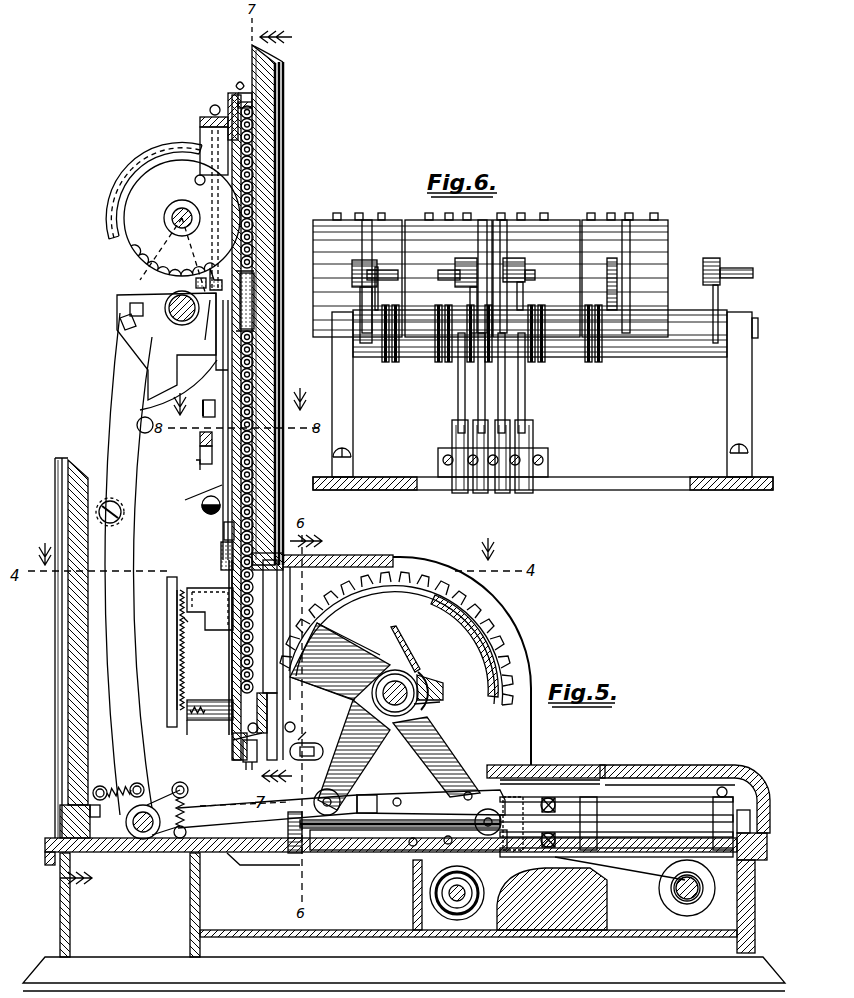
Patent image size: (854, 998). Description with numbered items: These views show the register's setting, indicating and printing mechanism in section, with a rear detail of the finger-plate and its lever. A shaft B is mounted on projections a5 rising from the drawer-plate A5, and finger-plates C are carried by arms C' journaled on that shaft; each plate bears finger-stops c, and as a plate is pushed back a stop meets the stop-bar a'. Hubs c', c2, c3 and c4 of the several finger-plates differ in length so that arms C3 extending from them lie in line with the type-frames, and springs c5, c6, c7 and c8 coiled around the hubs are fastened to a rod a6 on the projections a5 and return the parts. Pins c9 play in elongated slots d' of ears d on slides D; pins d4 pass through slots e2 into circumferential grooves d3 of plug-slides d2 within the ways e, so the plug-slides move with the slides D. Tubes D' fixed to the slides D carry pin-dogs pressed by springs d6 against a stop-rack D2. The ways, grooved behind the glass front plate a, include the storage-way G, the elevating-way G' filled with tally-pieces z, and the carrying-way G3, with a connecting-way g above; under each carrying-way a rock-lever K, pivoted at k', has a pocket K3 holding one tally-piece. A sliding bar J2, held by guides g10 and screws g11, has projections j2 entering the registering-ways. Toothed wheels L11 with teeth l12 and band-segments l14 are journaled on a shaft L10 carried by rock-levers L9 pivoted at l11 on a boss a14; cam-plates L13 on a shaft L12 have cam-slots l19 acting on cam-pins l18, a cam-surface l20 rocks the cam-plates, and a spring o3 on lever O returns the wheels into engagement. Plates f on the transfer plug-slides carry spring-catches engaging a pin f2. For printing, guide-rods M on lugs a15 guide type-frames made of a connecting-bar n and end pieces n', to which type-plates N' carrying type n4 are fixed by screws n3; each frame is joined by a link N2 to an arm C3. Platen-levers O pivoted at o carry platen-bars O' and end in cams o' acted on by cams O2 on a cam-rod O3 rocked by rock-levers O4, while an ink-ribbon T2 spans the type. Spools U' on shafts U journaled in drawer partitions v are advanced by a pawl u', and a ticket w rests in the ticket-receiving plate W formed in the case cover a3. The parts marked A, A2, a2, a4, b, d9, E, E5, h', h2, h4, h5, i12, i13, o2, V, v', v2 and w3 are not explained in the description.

In FIG. 5, the frame side wall A is at (62, 712).
In FIG. 5, the vertical guide column A2 is at (283, 150).
In FIG. 5, the drawer-plate A5 is at (130, 853).
In FIG. 6, the drawer-plate A5 is at (666, 490).
In FIG. 5, the front plate a is at (281, 305).
In FIG. 5, the stop-bar a' is at (327, 553).
In FIG. 5, the gear housing a2 is at (531, 710).
In FIG. 5, the cover of the case a3 is at (670, 766).
In FIG. 5, the wall plate a4 is at (75, 752).
In FIG. 5, the projections a5 is at (195, 699).
In FIG. 6, the projections a5 is at (542, 394).
In FIG. 5, the rod a6 is at (444, 691).
In FIG. 5, the boss a14 is at (420, 800).
In FIG. 5, the lugs a15 is at (295, 853).
In FIG. 5, the shaft B is at (410, 680).
In FIG. 6, the shaft B is at (755, 325).
In FIG. 6, the pin b is at (384, 288).
In FIG. 5, the finger-plate C is at (398, 619).
In FIG. 6, the finger-plate C is at (536, 265).
In FIG. 6, the arm C' is at (506, 258).
In FIG. 5, the finger-stop c is at (476, 646).
In FIG. 6, the finger-stop c is at (506, 251).
In FIG. 5, the hub of the units finger-plate c' is at (348, 650).
In FIG. 5, the hub of the tens finger-plate c2 is at (310, 743).
In FIG. 6, the hub of the tens finger-plate c2 is at (360, 298).
In FIG. 5, the arm C3 is at (440, 740).
In FIG. 6, the hub of the hundreds finger-plate c3 is at (610, 367).
In FIG. 5, the hub c4 is at (440, 704).
In FIG. 6, the hub c4 is at (545, 358).
In FIG. 6, the spring c5 is at (395, 362).
In FIG. 6, the spring c6 is at (438, 362).
In FIG. 5, the spring c7 is at (443, 686).
In FIG. 6, the spring c7 is at (545, 362).
In FIG. 5, the spring c8 is at (412, 652).
In FIG. 5, the pin c9 is at (305, 729).
In FIG. 5, the slide D is at (274, 726).
In FIG. 5, the tube D' is at (210, 701).
In FIG. 5, the stop-rack D2 is at (172, 592).
In FIG. 5, the ear d is at (274, 776).
In FIG. 5, the elongated slot d' is at (284, 764).
In FIG. 5, the plug-slide d2 is at (180, 625).
In FIG. 5, the circumferential groove d3 is at (240, 738).
In FIG. 5, the pin d4 is at (275, 729).
In FIG. 5, the spring d6 is at (187, 732).
In FIG. 5, the pawl d9 is at (192, 617).
In FIG. 5, the channel bar E is at (240, 660).
In FIG. 5, the channel wall E5 is at (232, 651).
In FIG. 5, the separating-way e is at (250, 777).
In FIG. 5, the slot e2 is at (277, 623).
In FIG. 5, the plate f is at (210, 609).
In FIG. 5, the pin f2 is at (221, 556).
In FIG. 5, the storage-way G is at (272, 296).
In FIG. 5, the elevating-way G' is at (276, 393).
In FIG. 5, the carrying-way G3 is at (215, 105).
In FIG. 5, the connecting-way g is at (239, 80).
In FIG. 5, the guide g10 is at (202, 403).
In FIG. 5, the screw g11 is at (185, 469).
In FIG. 5, the block h' is at (367, 806).
In FIG. 5, the rail h2 is at (370, 832).
In FIG. 5, the link h4 is at (672, 852).
In FIG. 5, the bar h5 is at (350, 830).
In FIG. 5, the pin i12 is at (192, 181).
In FIG. 5, the pawl i13 is at (202, 284).
In FIG. 5, the sliding bar J2 is at (200, 443).
In FIG. 5, the projection j2 is at (203, 484).
In FIG. 5, the rock-lever K is at (194, 506).
In FIG. 5, the pocket K3 is at (205, 327).
In FIG. 5, the pivot k' is at (210, 528).
In FIG. 5, the rock-lever L9 is at (108, 392).
In FIG. 5, the shaft L10 is at (170, 226).
In FIG. 5, the toothed wheel L11 is at (182, 227).
In FIG. 5, the shaft L12 is at (183, 321).
In FIG. 5, the cam-plate L13 is at (172, 426).
In FIG. 5, the pivot l11 is at (122, 512).
In FIG. 5, the teeth l12 is at (208, 282).
In FIG. 5, the band-segment l14 is at (165, 150).
In FIG. 5, the cam-pin l18 is at (130, 312).
In FIG. 5, the cam-slot l19 is at (141, 325).
In FIG. 5, the cam-surface l20 is at (172, 392).
In FIG. 5, the guide-rod M is at (380, 825).
In FIG. 6, the guide-rod M is at (548, 458).
In FIG. 5, the type-plate N' is at (617, 811).
In FIG. 6, the type-plate N' is at (494, 466).
In FIG. 5, the link N2 is at (340, 800).
In FIG. 5, the connecting-bar n is at (616, 836).
In FIG. 5, the end piece n' is at (723, 823).
In FIG. 5, the screw n3 is at (745, 782).
In FIG. 5, the type n4 is at (648, 778).
In FIG. 5, the platen-lever O is at (387, 819).
In FIG. 5, the platen-bar O' is at (569, 791).
In FIG. 5, the cam O2 is at (182, 794).
In FIG. 5, the cam-rod O3 is at (126, 820).
In FIG. 5, the rock-lever O4 is at (134, 687).
In FIG. 5, the pivot o is at (415, 787).
In FIG. 5, the cam o' is at (172, 812).
In FIG. 5, the spring o2 is at (201, 788).
In FIG. 5, the spring o3 is at (120, 784).
In FIG. 5, the ink-ribbon T2 is at (560, 800).
In FIG. 5, the shaft U is at (693, 888).
In FIG. 5, the spool U' is at (704, 887).
In FIG. 5, the pawl u' is at (502, 893).
In FIG. 5, the frame V is at (755, 903).
In FIG. 5, the partition v is at (434, 909).
In FIG. 5, the cam wheel v' is at (465, 893).
In FIG. 5, the link v2 is at (645, 868).
In FIG. 5, the ticket-receiving plate W is at (530, 765).
In FIG. 5, the ticket w is at (560, 770).
In FIG. 5, the block w3 is at (590, 912).
In FIG. 5, the tally-piece z is at (249, 108).